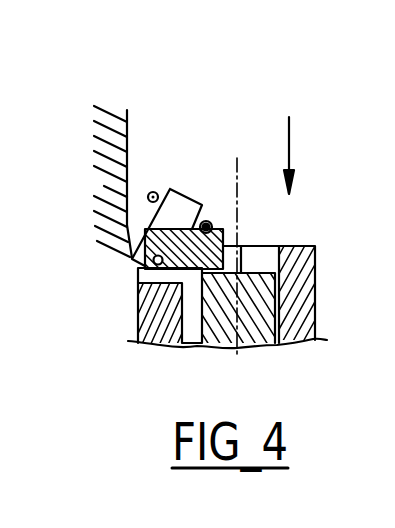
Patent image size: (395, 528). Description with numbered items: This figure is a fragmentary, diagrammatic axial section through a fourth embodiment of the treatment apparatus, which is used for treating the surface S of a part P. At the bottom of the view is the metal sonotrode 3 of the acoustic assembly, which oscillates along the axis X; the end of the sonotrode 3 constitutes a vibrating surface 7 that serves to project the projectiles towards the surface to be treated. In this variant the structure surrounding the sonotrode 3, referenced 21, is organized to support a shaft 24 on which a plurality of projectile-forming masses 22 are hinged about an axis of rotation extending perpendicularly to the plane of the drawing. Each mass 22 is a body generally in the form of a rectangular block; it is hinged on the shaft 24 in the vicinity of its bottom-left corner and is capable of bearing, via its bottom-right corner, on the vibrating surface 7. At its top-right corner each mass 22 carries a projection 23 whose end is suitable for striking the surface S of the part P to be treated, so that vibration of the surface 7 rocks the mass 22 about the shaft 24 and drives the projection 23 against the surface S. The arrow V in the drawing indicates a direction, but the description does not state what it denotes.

The sonotrode 3 is at (255, 298).
The vibrating surface 7 is at (258, 278).
The structure surrounding the sonotrode 21 is at (152, 297).
The projectile-forming mass 22 is at (172, 199).
The projection 23 is at (206, 226).
The shaft 24 is at (138, 261).
The part P is at (109, 182).
The surface S is at (127, 134).
The feed direction V is at (302, 140).
The axis X is at (237, 158).